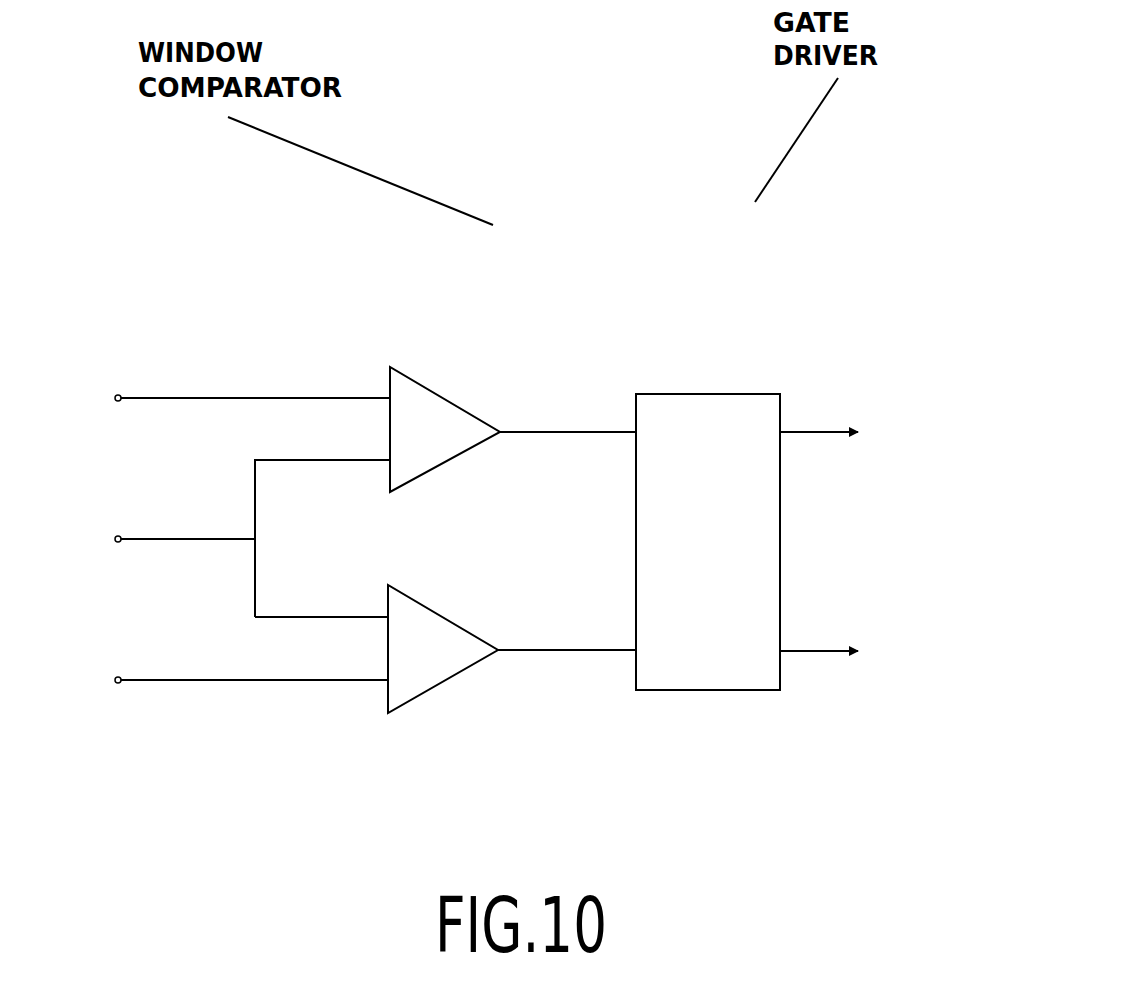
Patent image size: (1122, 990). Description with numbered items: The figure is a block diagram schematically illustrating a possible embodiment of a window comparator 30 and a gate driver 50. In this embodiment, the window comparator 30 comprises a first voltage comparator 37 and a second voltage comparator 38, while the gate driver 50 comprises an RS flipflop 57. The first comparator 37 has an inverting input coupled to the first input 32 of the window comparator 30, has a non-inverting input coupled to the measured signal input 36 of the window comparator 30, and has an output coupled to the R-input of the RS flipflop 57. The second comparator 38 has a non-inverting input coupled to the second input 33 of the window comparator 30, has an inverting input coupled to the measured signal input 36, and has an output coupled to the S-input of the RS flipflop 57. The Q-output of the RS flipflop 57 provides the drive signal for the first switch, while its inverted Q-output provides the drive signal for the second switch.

The window comparator 30 is at (512, 471).
The first input 32 is at (226, 387).
The second input 33 is at (225, 669).
The measured signal input 36 is at (226, 538).
The first voltage comparator 37 is at (447, 397).
The second voltage comparator 38 is at (442, 617).
The gate driver 50 is at (784, 462).
The RS flipflop 57 is at (722, 553).